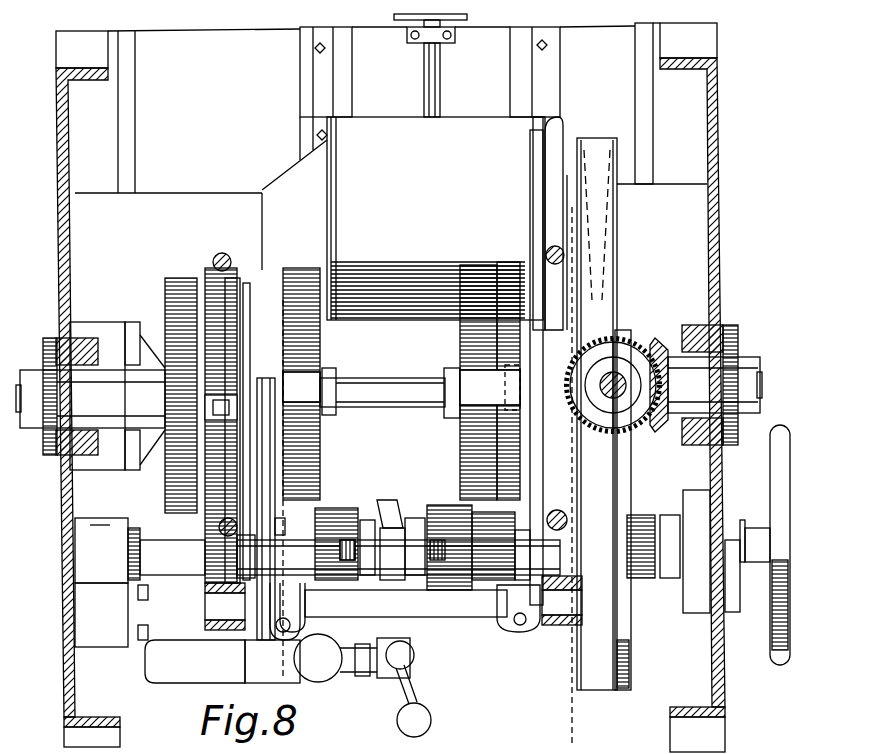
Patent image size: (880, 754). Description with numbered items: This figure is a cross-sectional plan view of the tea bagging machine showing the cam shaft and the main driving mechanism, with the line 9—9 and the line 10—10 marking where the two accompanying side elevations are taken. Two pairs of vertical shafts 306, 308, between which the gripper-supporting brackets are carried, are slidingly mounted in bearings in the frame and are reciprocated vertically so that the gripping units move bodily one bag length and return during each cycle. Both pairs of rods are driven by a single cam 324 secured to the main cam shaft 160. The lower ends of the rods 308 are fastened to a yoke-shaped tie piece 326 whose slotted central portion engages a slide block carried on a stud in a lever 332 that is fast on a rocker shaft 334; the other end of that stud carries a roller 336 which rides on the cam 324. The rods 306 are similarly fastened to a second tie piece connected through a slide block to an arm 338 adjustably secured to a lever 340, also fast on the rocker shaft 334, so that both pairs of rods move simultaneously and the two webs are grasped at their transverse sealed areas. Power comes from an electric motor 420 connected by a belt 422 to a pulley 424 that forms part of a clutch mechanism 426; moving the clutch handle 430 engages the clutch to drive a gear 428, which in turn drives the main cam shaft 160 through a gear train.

The line 9— 9 is at (585, 207).
The line 10— 10 is at (300, 318).
The main cam shaft 160 is at (363, 380).
The vertical shafts 306 is at (218, 255).
The vertical shafts 308 is at (566, 258).
The cam 324 is at (507, 252).
The yoke-shaped tie piece 326 is at (560, 345).
The lever 332 is at (530, 540).
The rocker shaft 334 is at (485, 615).
The roller 336 is at (508, 365).
The arm 338 is at (280, 452).
The lever 340 is at (333, 505).
The electric motor 420 is at (430, 180).
The belt 422 is at (600, 300).
The pulley 424 is at (628, 650).
The clutch mechanism 426 is at (447, 630).
The gear 428 is at (205, 573).
The clutch handle 430 is at (432, 718).